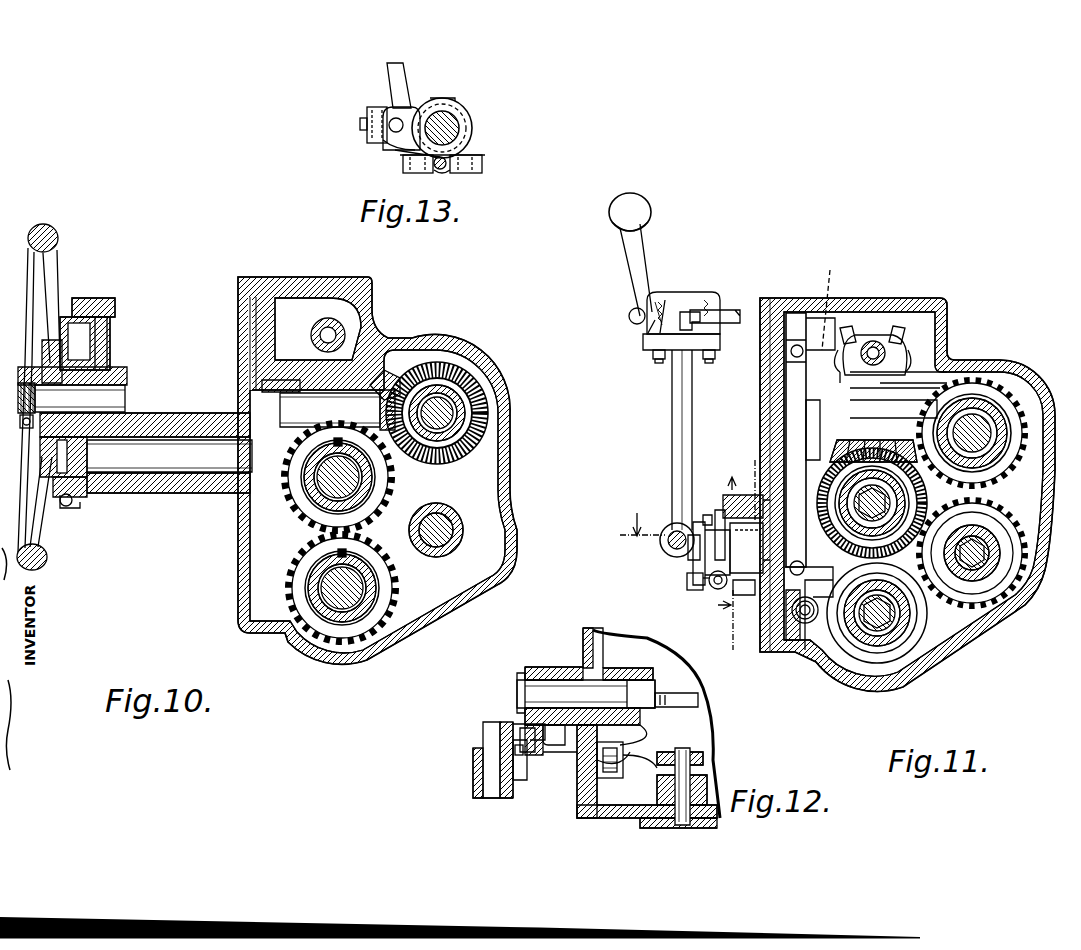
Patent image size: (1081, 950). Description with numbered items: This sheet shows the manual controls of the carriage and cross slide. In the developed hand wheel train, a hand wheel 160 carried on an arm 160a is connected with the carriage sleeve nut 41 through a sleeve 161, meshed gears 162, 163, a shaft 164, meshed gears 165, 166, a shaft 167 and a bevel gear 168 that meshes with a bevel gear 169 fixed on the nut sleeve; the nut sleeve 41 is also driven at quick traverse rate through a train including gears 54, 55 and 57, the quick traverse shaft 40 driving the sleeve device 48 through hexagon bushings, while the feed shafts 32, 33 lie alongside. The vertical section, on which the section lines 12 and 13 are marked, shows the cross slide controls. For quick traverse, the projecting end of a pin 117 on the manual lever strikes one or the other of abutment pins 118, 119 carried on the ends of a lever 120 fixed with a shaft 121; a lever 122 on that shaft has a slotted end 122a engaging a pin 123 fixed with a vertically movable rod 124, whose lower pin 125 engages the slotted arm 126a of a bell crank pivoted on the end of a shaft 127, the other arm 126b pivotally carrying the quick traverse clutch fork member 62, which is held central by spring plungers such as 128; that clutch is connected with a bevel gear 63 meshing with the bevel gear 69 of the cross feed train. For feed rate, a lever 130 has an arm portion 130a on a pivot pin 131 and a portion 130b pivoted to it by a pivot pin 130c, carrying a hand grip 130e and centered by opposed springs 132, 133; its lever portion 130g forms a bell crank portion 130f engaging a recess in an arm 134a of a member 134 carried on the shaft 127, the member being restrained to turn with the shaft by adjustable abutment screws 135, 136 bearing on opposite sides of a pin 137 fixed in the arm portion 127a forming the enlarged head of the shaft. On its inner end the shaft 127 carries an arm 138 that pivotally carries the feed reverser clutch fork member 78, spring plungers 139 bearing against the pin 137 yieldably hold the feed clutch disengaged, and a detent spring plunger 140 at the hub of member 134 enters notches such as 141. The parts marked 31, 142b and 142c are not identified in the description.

In FIG. 11, the section line 12— 12 is at (728, 401).
In FIG. 11, the section line 13— 13 is at (735, 552).
In FIG. 10, the gear 31 is at (450, 408).
In FIG. 11, the gear 31 is at (980, 420).
In FIG. 10, the feed shaft 32 is at (295, 518).
In FIG. 11, the feed shaft 32 is at (882, 455).
In FIG. 10, the feed shaft 33 is at (462, 525).
In FIG. 11, the feed shaft 33 is at (987, 573).
In FIG. 10, the quick traverse shaft 40 is at (300, 580).
In FIG. 11, the quick traverse shaft 40 is at (877, 645).
In FIG. 10, the carriage nut sleeve 41 is at (482, 405).
In FIG. 11, the sleeve device 48 is at (880, 630).
In FIG. 10, the gear 54 is at (298, 570).
In FIG. 10, the gear 55 is at (305, 520).
In FIG. 11, the gear 57 is at (982, 603).
In FIG. 11, the quick traverse clutch fork member 62 is at (845, 640).
In FIG. 11, the bevel gear 63 is at (943, 503).
In FIG. 11, the bevel gear 69 is at (1007, 465).
In FIG. 11, the feed reverser clutch fork member 78 is at (870, 438).
In FIG. 11, the pin 117 is at (871, 365).
In FIG. 11, the abutment pin 118 is at (845, 372).
In FIG. 11, the abutment pin 119 is at (890, 368).
In FIG. 12, the lever 120 is at (725, 812).
In FIG. 11, the lever 120 is at (862, 335).
In FIG. 12, the shaft 121 is at (700, 790).
In FIG. 11, the shaft 121 is at (898, 327).
In FIG. 12, the lever 122 is at (650, 770).
In FIG. 11, the lever 122 is at (830, 318).
In FIG. 11, the slotted end 122a is at (768, 330).
In FIG. 12, the pin 123 is at (612, 778).
In FIG. 11, the pin 123 is at (797, 347).
In FIG. 12, the vertically movable rod 124 is at (595, 782).
In FIG. 11, the vertically movable rod 124 is at (790, 425).
In FIG. 11, the pin 125 is at (747, 548).
In FIG. 12, the bell crank arm 126a is at (580, 735).
In FIG. 11, the bell crank arm 126a is at (808, 470).
In FIG. 11, the bell crank arm 126b is at (780, 620).
In FIG. 13, the shaft 127 is at (460, 130).
In FIG. 12, the shaft 127 is at (568, 680).
In FIG. 13, the arm portion 127a is at (443, 170).
In FIG. 11, the arm portion 127a is at (690, 565).
In FIG. 11, the spring plunger 128 is at (797, 625).
In FIG. 11, the lever 130 is at (670, 396).
In FIG. 13, the arm portion 130a is at (392, 88).
In FIG. 12, the arm portion 130a is at (475, 740).
In FIG. 11, the arm portion 130a is at (680, 420).
In FIG. 11, the lever portion 130b is at (645, 340).
In FIG. 11, the pivot pin 130c is at (665, 365).
In FIG. 11, the hand grip 130e is at (637, 215).
In FIG. 13, the bell crank portion 130f is at (385, 145).
In FIG. 12, the bell crank portion 130f is at (522, 735).
In FIG. 11, the bell crank portion 130f is at (692, 535).
In FIG. 12, the lever portion 130g is at (517, 748).
In FIG. 13, the pivot pin 131 is at (360, 125).
In FIG. 12, the pivot pin 131 is at (480, 762).
In FIG. 11, the pivot pin 131 is at (662, 548).
In FIG. 11, the spring 132 is at (660, 300).
In FIG. 11, the spring 133 is at (710, 305).
In FIG. 13, the member 134 is at (470, 118).
In FIG. 12, the member 134 is at (535, 667).
In FIG. 11, the member 134 is at (695, 523).
In FIG. 13, the arm 134a is at (405, 110).
In FIG. 12, the arm 134a is at (525, 724).
In FIG. 13, the adjustable abutment screw 135 is at (405, 165).
In FIG. 11, the adjustable abutment screw 135 is at (714, 590).
In FIG. 13, the adjustable abutment screw 136 is at (478, 166).
In FIG. 13, the pin 137 is at (436, 170).
In FIG. 11, the pin 137 is at (685, 582).
In FIG. 12, the arm 138 is at (622, 664).
In FIG. 11, the spring plunger 139 is at (740, 597).
In FIG. 11, the spring plunger 140 is at (748, 493).
In FIG. 11, the notch 141 is at (718, 510).
In FIG. 11, the detent 142b is at (735, 312).
In FIG. 11, the detent 142c is at (690, 300).
In FIG. 10, the hand wheel 160 is at (56, 233).
In FIG. 10, the arm 160a is at (142, 494).
In FIG. 10, the sleeve 161 is at (75, 368).
In FIG. 10, the gear 162 is at (92, 345).
In FIG. 10, the gear 163 is at (84, 503).
In FIG. 10, the shaft 164 is at (165, 452).
In FIG. 10, the gear 165 is at (238, 528).
In FIG. 10, the gear 166 is at (280, 400).
In FIG. 10, the shaft 167 is at (268, 382).
In FIG. 10, the bevel gear 168 is at (385, 388).
In FIG. 10, the bevel gear 169 is at (442, 385).